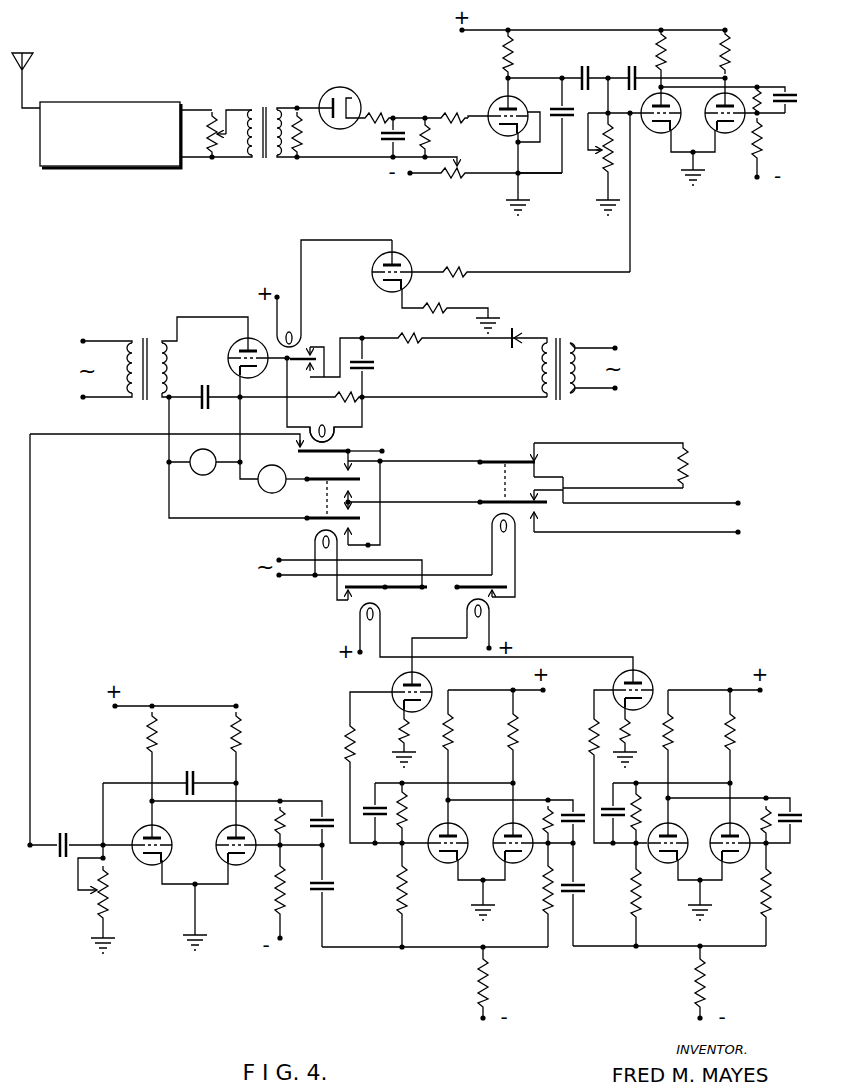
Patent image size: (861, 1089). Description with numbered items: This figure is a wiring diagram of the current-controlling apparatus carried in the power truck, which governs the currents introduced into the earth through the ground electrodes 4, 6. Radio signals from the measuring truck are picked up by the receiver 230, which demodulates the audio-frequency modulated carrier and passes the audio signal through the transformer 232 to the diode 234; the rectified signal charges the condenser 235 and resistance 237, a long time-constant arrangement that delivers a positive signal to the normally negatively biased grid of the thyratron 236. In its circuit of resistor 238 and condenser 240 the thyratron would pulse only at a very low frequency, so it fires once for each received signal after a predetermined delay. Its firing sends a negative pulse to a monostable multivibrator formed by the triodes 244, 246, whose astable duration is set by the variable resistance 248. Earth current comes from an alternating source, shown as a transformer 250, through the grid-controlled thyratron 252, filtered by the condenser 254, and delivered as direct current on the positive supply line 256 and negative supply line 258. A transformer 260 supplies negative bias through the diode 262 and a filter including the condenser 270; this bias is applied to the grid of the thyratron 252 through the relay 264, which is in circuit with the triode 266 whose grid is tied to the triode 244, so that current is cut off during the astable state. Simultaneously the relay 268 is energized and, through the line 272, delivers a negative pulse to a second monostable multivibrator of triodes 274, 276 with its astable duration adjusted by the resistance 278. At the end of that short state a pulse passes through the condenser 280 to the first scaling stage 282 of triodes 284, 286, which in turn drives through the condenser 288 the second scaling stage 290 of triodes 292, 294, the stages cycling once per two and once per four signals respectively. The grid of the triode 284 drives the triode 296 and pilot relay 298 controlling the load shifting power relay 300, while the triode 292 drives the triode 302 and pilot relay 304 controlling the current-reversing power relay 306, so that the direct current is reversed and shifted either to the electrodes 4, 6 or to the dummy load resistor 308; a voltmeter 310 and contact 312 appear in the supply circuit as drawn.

The receiver 230 is at (128, 101).
The transformer 232 is at (266, 99).
The diode 234 is at (347, 89).
The condenser 235 is at (403, 126).
The thyratron 236 is at (495, 96).
The resistance 237 is at (379, 109).
The resistor 238 is at (514, 63).
The condenser 240 is at (568, 153).
The triode 244 is at (647, 80).
The triode 246 is at (737, 82).
The variable resistance 248 is at (618, 153).
The transformer 250 is at (142, 332).
The thyratron 252 is at (248, 338).
The condenser 254 is at (198, 399).
The positive supply line 256 is at (250, 490).
The negative supply line 258 is at (188, 518).
The transformer 260 is at (575, 340).
The diode 262 is at (510, 354).
The relay 264 is at (304, 340).
The triode 266 is at (407, 262).
The relay 268 is at (357, 437).
The condenser 270 is at (378, 365).
The line 272 is at (36, 566).
The triode 274 is at (138, 826).
The triode 276 is at (246, 824).
The adjustment of resistance 278 is at (110, 900).
The condenser 280 is at (340, 882).
The scaling stage 282 is at (498, 821).
The triode 284 is at (462, 834).
The triode 286 is at (518, 866).
The condenser 288 is at (588, 888).
The second scaling stage 290 is at (721, 821).
The triode 292 is at (682, 831).
The triode 294 is at (736, 866).
The triode 296 is at (392, 682).
The pilot relay 298 is at (502, 608).
The load shifting power relay 300 is at (524, 538).
The triode 302 is at (652, 682).
The pilot relay 304 is at (352, 610).
The power relay 306 is at (312, 531).
The dummy load resistor 308 is at (693, 458).
The voltmeter 310 is at (203, 475).
The relay contact 312 is at (325, 444).
The electrode 4 is at (742, 502).
The electrode 6 is at (742, 531).